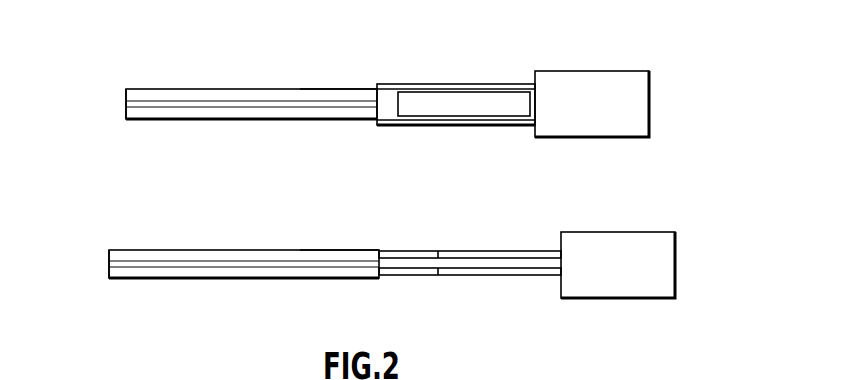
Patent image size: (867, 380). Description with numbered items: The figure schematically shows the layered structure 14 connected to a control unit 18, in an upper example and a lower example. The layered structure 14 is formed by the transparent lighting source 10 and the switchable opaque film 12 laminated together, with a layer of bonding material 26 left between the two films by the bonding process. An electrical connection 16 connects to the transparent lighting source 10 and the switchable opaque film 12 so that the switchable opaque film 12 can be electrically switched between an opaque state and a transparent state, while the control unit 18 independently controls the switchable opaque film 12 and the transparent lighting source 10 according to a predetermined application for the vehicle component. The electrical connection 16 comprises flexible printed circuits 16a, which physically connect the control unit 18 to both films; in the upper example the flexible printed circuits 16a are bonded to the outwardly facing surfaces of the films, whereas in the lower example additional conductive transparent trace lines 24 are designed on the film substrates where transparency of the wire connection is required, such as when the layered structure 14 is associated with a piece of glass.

The transparent lighting source 10 is at (172, 89).
The switchable opaque film 12 is at (230, 119).
The layered structure 14 is at (324, 80).
The electrical connection 16 is at (469, 169).
The flexible printed circuits 16a is at (425, 84).
The control unit 18 is at (649, 100).
The conductive transparent trace lines 24 is at (403, 275).
The layer of bonding material 26 is at (126, 104).